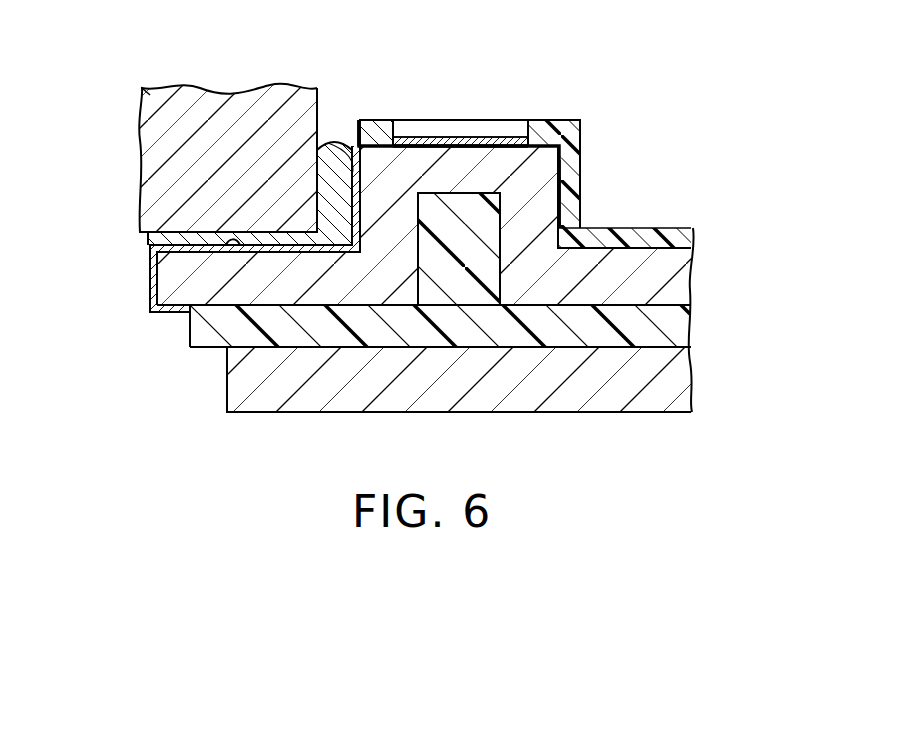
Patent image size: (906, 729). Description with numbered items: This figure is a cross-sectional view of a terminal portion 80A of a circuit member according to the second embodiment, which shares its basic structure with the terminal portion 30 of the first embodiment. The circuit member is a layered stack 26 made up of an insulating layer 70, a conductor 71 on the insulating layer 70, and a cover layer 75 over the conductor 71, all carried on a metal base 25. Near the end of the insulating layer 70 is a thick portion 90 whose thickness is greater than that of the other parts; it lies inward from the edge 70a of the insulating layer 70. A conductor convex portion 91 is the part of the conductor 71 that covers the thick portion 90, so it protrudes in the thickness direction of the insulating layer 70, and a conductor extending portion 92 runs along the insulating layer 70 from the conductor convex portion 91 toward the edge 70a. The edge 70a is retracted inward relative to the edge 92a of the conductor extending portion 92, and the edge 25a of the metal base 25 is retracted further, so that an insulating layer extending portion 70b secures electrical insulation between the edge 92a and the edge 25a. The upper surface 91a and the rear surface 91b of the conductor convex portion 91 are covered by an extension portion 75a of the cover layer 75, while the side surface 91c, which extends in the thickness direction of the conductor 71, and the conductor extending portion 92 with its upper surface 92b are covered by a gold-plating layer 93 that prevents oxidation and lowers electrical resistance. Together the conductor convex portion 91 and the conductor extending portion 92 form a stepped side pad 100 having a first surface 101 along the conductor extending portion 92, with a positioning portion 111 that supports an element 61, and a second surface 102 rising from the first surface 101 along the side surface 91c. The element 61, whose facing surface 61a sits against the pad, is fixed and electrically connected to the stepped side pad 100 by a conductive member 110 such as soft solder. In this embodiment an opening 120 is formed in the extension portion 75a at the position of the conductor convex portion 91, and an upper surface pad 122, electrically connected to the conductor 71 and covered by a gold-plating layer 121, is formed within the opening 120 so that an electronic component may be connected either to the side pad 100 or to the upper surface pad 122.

The metal base 25 is at (457, 379).
The edge of metal base 25a is at (227, 392).
The flow path forming substrate laminate 26 is at (768, 213).
The terminal portion 30 is at (685, 215).
The element 61 is at (155, 130).
The side surface of wiring substrate 61a is at (318, 125).
The insulating layer 70 is at (427, 202).
The edge of insulating layer 70a is at (190, 322).
The insulating layer extending portion 70b is at (203, 350).
The conductor 71 is at (682, 285).
The cover layer 75 is at (687, 242).
The extension portion of cover layer 75a is at (553, 118).
The terminal portion 80A is at (507, 115).
The thick portion 90 is at (500, 165).
The conductor convex portion 91 is at (507, 137).
The upper surface of conductor convex portion 91a is at (420, 132).
The rear surface of conductor convex portion 91b is at (563, 200).
The side surface of conductor convex portion 91c is at (352, 124).
The conductor extending portion 92 is at (206, 303).
The edge of conductor extending portion 92a is at (148, 285).
The upper surface of conductor extending portion 92b is at (200, 240).
The gold-plating layer 93 is at (147, 250).
The stepped side pad 100 is at (196, 127).
The first surface 101 is at (262, 230).
The second surface 102 is at (340, 228).
The conductive member 110 is at (337, 138).
The positioning portion 111 is at (250, 252).
The opening 120 is at (504, 125).
The gold-plating layer 121 is at (462, 213).
The upper surface pad 122 is at (447, 137).